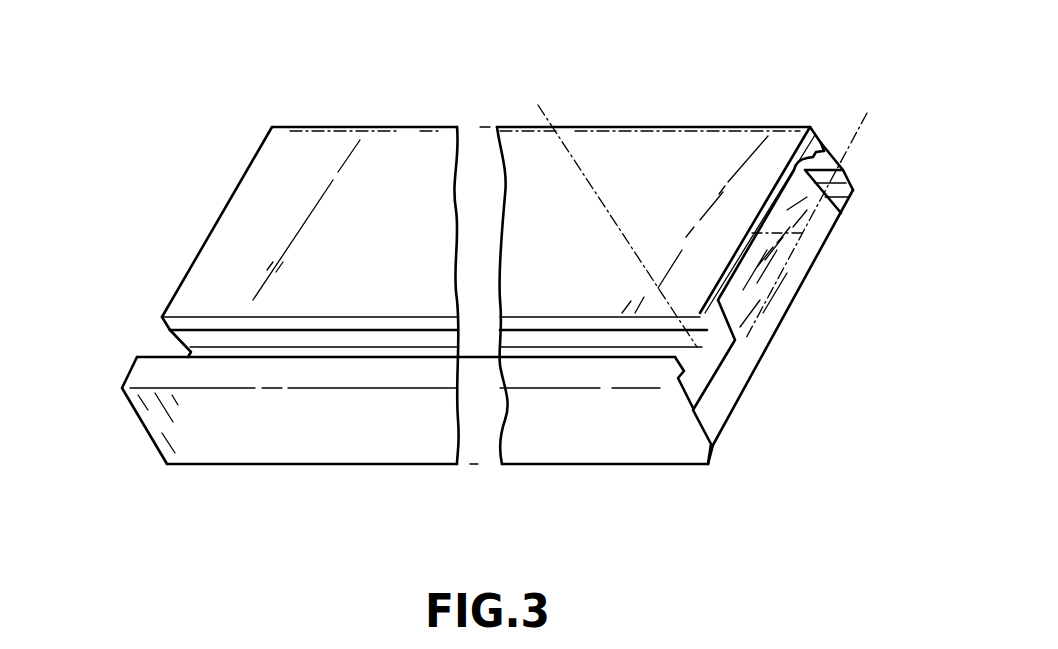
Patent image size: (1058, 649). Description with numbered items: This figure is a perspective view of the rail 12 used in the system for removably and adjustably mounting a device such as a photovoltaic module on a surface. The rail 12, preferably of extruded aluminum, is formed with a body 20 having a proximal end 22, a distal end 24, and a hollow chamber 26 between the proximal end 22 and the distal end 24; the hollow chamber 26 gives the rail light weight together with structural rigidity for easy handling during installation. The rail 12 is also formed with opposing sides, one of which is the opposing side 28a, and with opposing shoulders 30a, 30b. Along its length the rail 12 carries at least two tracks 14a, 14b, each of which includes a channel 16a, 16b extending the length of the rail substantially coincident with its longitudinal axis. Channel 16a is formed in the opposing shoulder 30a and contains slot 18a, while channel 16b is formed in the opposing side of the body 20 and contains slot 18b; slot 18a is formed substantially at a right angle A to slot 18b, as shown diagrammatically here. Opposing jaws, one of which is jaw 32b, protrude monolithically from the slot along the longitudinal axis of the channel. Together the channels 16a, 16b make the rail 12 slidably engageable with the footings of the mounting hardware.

The rail 12 is at (511, 104).
The track 14a is at (840, 223).
The track 14b is at (727, 349).
The channel 16a is at (848, 165).
The channel 16b is at (155, 343).
The slot 18a is at (853, 203).
The slot 18b is at (333, 337).
The body 20 is at (237, 202).
The proximal end 22 is at (758, 298).
The distal end 24 is at (140, 404).
The hollow chamber 26 is at (792, 287).
The opposing side 28a is at (400, 142).
The opposing shoulder 30a is at (825, 148).
The opposing shoulder 30b is at (690, 458).
The jaw 32b is at (662, 385).
The right angle A is at (565, 146).